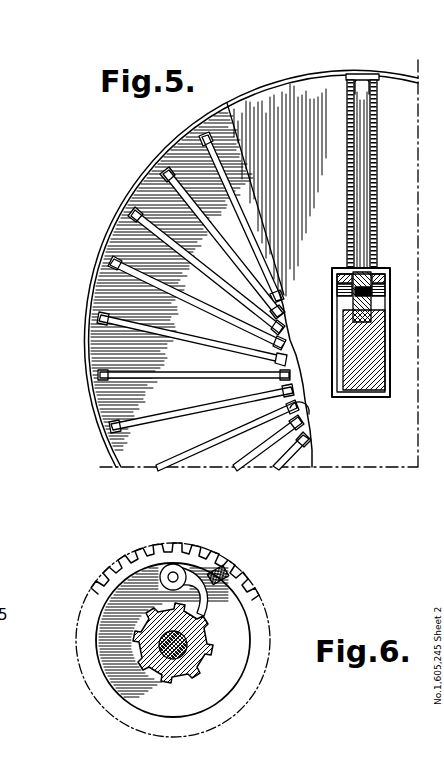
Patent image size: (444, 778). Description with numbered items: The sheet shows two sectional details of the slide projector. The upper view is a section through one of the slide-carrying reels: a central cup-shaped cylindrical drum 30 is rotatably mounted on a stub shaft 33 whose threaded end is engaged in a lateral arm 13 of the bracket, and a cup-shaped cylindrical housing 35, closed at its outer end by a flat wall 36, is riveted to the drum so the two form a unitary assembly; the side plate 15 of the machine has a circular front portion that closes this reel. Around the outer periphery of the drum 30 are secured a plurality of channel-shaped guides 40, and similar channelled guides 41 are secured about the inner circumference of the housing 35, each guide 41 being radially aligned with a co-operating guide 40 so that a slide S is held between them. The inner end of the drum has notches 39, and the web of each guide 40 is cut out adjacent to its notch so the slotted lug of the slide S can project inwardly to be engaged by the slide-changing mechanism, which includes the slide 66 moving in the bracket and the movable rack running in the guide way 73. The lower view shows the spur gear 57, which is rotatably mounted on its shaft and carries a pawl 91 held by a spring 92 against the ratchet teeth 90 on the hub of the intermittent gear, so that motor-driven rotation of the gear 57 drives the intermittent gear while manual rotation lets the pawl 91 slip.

In FIG. 5, the lateral arm 13 is at (385, 322).
In FIG. 5, the plate 15 is at (292, 90).
In FIG. 5, the drum 30 is at (284, 356).
In FIG. 5, the stub shaft 33 is at (353, 390).
In FIG. 5, the housing 35 is at (88, 393).
In FIG. 5, the flat wall 36 is at (176, 151).
In FIG. 5, the notch 39 is at (272, 369).
In FIG. 5, the channel shaped guide 40 is at (375, 256).
In FIG. 5, the channelled guide 41 is at (361, 80).
In FIG. 5, the slide 66 is at (379, 293).
In FIG. 5, the guide way 73 is at (389, 273).
In FIG. 5, the slide S is at (366, 135).
In FIG. 6, the spur gear 57 is at (110, 560).
In FIG. 6, the ratchet teeth 90 is at (216, 648).
In FIG. 6, the pawl 91 is at (203, 570).
In FIG. 6, the spring 92 is at (228, 593).